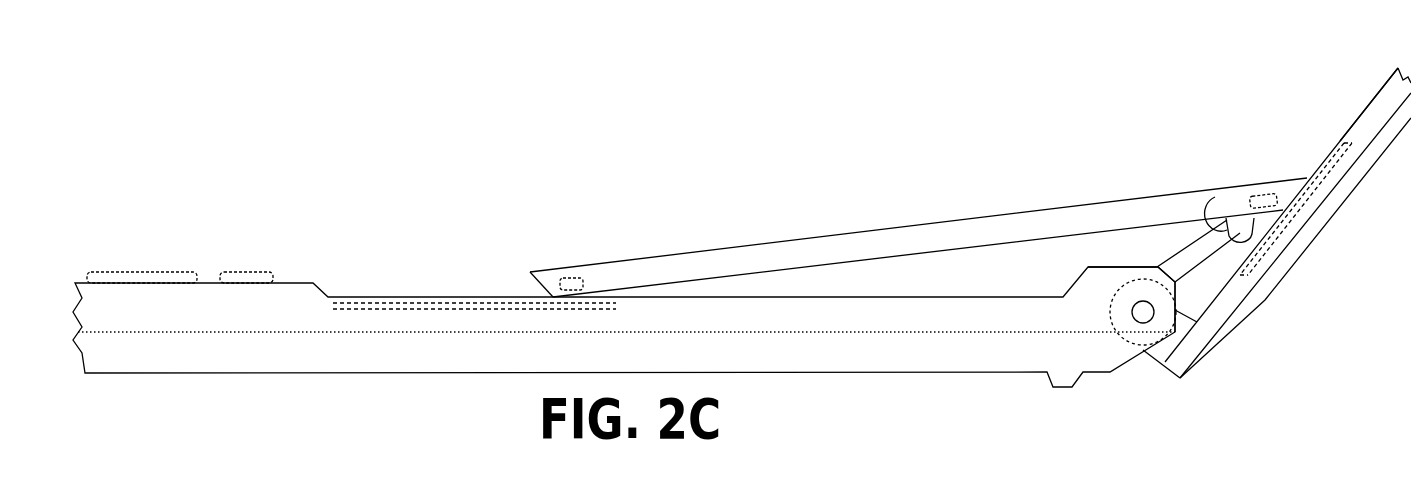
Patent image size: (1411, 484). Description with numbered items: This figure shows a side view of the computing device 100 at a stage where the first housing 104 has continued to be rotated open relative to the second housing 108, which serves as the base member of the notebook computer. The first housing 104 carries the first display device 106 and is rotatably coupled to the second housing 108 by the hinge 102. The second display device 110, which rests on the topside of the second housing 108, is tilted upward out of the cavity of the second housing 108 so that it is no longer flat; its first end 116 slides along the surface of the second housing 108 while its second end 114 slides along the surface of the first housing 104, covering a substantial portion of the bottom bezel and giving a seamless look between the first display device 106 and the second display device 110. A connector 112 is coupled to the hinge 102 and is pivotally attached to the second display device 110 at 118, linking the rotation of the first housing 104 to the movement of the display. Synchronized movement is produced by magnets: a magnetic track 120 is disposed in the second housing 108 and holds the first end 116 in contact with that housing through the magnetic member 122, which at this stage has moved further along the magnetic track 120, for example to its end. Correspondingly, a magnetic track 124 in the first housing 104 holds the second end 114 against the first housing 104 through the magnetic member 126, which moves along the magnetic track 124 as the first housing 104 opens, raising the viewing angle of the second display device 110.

The computing device 100 is at (743, 193).
The hinge 102 is at (1131, 313).
The first housing 104 is at (1300, 262).
The first display device 106 is at (1378, 92).
The second housing 108 is at (817, 376).
The second display device 110 is at (937, 220).
The connector 112 is at (1182, 250).
The second end 114 is at (1338, 204).
The first end 116 is at (540, 290).
The pivot attachment 118 is at (1209, 206).
The magnetic track 120 is at (412, 297).
The magnetic member 122 is at (571, 277).
The magnetic track 124 is at (1326, 150).
The magnetic member 126 is at (1266, 193).